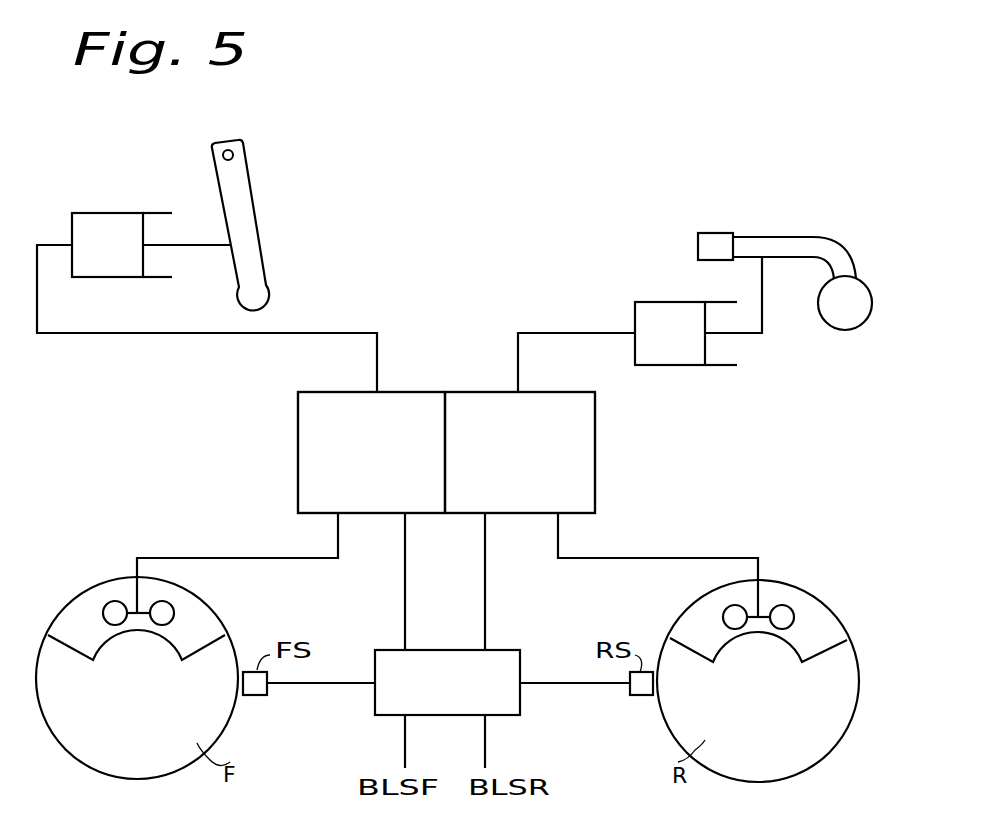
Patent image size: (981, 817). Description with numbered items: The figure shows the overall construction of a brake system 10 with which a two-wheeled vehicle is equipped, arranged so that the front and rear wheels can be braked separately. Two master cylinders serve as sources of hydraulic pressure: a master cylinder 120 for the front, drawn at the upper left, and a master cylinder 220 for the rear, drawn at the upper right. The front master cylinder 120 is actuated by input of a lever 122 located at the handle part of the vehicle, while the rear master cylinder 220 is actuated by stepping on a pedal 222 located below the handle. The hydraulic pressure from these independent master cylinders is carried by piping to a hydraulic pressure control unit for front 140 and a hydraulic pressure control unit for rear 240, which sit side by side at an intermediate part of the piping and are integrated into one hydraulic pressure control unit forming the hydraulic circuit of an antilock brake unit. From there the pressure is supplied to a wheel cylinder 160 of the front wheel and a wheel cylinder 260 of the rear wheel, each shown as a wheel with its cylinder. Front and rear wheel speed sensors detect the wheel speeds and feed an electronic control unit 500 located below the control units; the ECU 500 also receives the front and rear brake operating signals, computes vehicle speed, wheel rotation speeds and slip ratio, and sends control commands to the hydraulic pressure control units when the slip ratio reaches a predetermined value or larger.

The brake system 10 is at (440, 271).
The master cylinder for front 120 is at (160, 278).
The lever 122 is at (242, 217).
The hydraulic pressure control unit for front 140 is at (298, 493).
The wheel cylinder 160 is at (192, 615).
The master cylinder for rear 220 is at (652, 300).
The pedal 222 is at (817, 247).
The hydraulic pressure control unit for rear 240 is at (595, 465).
The wheel cylinder 260 is at (812, 613).
The electronic control unit 500 is at (502, 649).